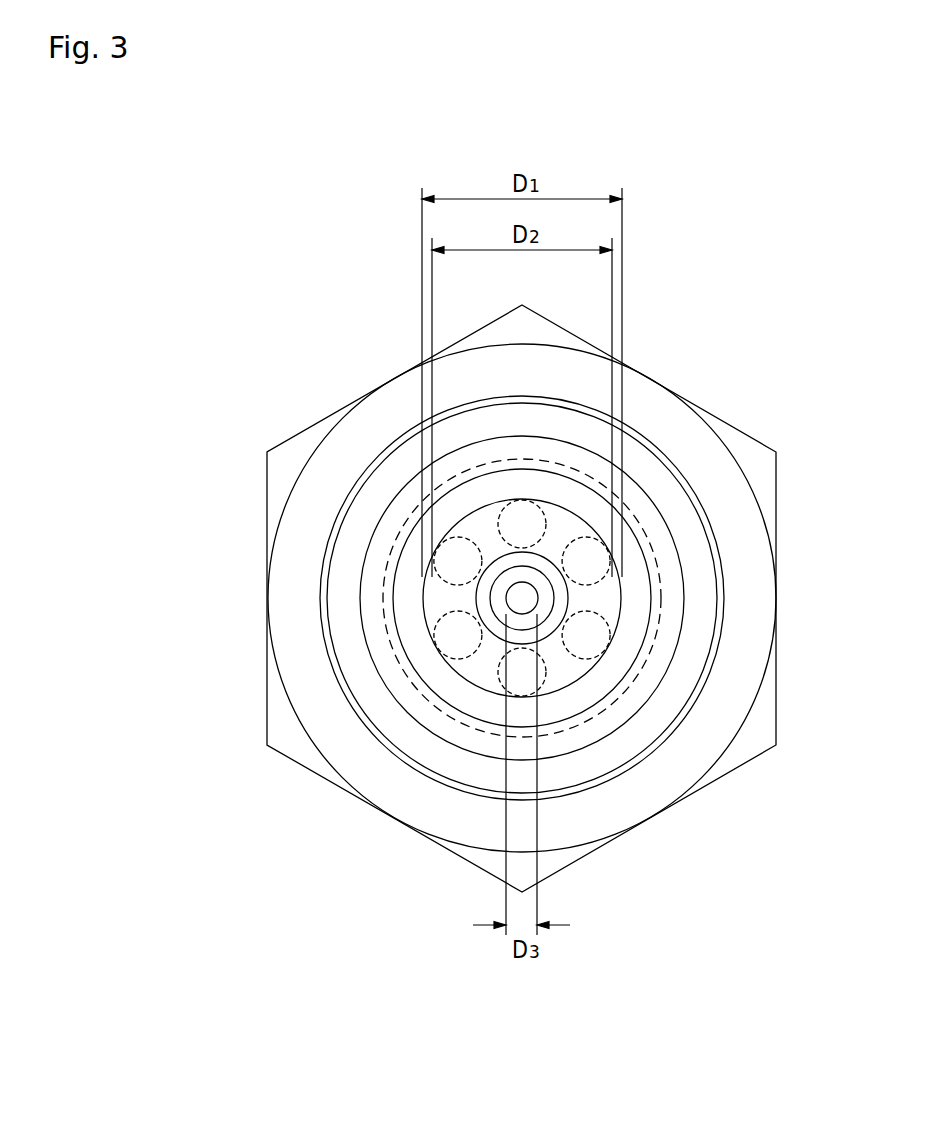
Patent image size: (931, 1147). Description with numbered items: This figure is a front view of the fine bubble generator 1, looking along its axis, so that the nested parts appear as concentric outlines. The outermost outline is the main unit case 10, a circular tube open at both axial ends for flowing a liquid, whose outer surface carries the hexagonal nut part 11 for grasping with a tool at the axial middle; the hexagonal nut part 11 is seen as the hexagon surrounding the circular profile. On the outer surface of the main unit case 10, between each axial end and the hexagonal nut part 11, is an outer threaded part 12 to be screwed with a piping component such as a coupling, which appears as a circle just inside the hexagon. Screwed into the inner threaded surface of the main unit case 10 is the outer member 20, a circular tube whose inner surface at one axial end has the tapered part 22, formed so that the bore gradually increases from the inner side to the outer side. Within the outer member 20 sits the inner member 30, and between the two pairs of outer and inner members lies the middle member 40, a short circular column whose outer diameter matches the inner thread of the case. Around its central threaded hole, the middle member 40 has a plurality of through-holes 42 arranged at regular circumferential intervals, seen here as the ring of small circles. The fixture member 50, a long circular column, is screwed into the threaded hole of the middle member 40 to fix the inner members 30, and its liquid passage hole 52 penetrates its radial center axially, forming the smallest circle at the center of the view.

The fine bubble generator 1 is at (374, 338).
The main unit case 10 is at (328, 417).
The hexagonal nut part 11 is at (748, 452).
The outer threaded part 12 is at (650, 437).
The outer member 20 is at (647, 707).
The tapered part 22 is at (460, 698).
The inner member 30 is at (442, 608).
The middle member 40 is at (660, 593).
The through-hole 42 is at (378, 692).
The fixture member 50 is at (502, 572).
The liquid passage hole 52 is at (523, 597).